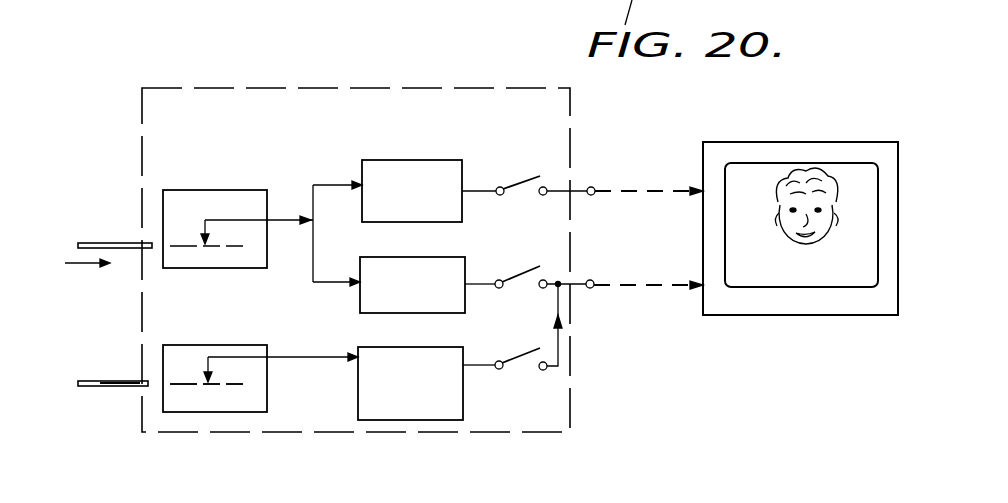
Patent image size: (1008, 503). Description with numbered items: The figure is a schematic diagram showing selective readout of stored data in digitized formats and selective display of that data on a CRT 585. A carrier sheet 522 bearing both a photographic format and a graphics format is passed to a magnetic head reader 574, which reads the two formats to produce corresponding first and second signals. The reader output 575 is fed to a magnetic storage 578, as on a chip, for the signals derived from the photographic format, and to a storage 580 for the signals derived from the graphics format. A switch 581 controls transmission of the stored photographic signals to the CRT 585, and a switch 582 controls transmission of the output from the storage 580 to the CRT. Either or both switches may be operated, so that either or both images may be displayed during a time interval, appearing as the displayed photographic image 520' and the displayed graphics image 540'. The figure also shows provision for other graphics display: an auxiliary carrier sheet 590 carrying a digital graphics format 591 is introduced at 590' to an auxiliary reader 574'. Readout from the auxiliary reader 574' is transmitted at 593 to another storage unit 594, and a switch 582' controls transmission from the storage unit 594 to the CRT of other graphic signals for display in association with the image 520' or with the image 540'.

The carrier sheet 522 is at (103, 243).
The magnetic head reader 574 is at (209, 203).
The reader output 575 is at (275, 218).
The magnetic storage for photographic signals 578 is at (392, 160).
The graphics signal storage 580 is at (453, 257).
The switch 581 is at (521, 178).
The switch 582 is at (584, 257).
The switch 582' is at (554, 350).
The auxiliary reader 574' is at (215, 346).
The readout transmission 593 is at (302, 359).
The other storage unit 594 is at (392, 421).
The digital graphics format 591 is at (112, 381).
The auxiliary carrier sheet 590 is at (91, 419).
The introduction of auxiliary carrier 590' is at (181, 434).
The CRT 585 is at (853, 141).
The displayed photographic image 520' is at (765, 168).
The displayed graphics image 540' is at (798, 310).